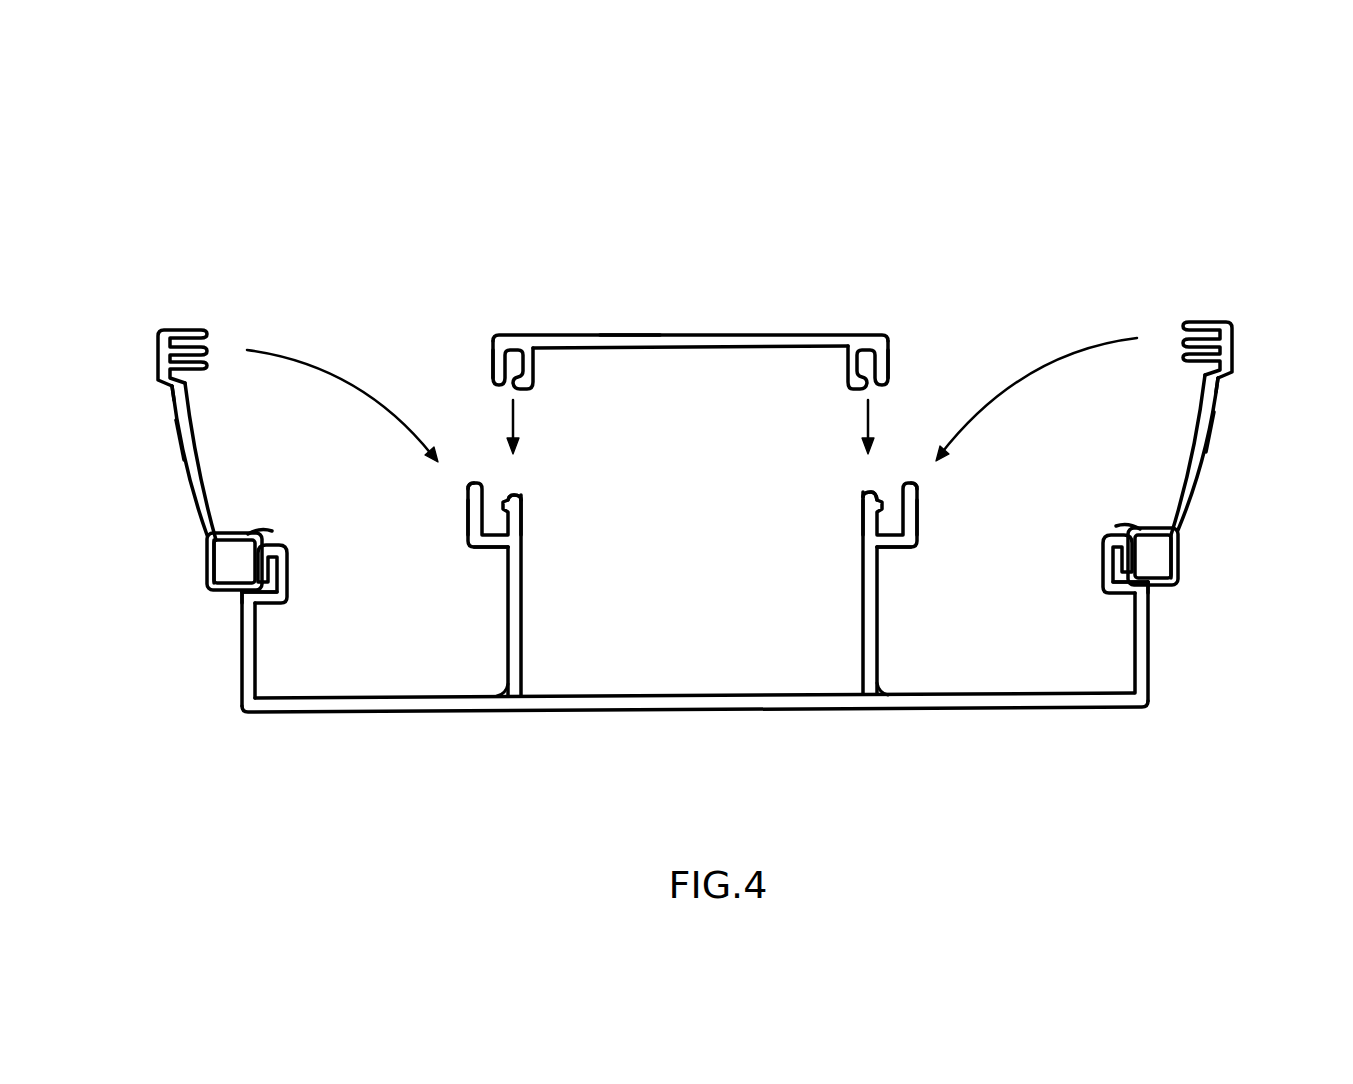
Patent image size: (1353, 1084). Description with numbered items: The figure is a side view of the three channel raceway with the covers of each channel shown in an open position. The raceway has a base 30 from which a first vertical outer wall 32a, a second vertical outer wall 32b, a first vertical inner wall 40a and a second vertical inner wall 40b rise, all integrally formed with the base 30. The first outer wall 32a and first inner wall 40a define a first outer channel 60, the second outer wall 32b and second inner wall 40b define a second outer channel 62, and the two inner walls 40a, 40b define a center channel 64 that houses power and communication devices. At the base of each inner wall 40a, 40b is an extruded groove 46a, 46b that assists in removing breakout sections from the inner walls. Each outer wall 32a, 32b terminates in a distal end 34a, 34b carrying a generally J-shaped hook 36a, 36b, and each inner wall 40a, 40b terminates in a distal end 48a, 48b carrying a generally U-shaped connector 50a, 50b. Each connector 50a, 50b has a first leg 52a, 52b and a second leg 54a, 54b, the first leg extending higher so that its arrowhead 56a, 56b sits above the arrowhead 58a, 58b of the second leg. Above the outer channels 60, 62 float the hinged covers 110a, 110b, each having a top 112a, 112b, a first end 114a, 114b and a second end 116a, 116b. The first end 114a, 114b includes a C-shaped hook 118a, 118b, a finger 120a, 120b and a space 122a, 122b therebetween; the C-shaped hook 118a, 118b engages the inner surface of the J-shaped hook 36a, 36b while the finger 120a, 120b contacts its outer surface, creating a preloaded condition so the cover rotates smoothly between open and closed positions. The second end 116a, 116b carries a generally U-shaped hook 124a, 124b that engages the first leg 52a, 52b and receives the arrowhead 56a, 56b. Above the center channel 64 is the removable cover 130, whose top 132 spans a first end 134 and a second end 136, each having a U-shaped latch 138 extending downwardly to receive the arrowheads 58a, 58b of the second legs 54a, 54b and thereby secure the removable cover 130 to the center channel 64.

The base 30 is at (590, 711).
The first vertical outer wall 32a is at (250, 662).
The second vertical outer wall 32b is at (1145, 662).
The distal end 34a is at (247, 600).
The distal end 34b is at (1145, 595).
The J-shaped hook 36a is at (288, 572).
The J-shaped hook 36b is at (1102, 568).
The first vertical inner wall 40a is at (522, 632).
The second vertical inner wall 40b is at (862, 612).
The extruded groove 46a is at (505, 692).
The extruded groove 46b is at (880, 690).
The distal end 48a is at (522, 546).
The distal end 48b is at (862, 538).
The U-shaped connector 50a is at (490, 470).
The U-shaped connector 50b is at (896, 490).
The first leg 52a is at (478, 521).
The first leg 52b is at (920, 522).
The second leg 54a is at (525, 521).
The second leg 54b is at (862, 517).
The arrowhead 56a is at (466, 487).
The arrowhead 56b is at (920, 486).
The arrowhead 58a is at (525, 490).
The arrowhead 58b is at (858, 492).
The first outer channel 60 is at (333, 667).
The second outer channel 62 is at (1065, 663).
The center channel 64 is at (705, 675).
The hinged cover 110a is at (194, 500).
The hinged cover 110b is at (1208, 465).
The top 112a is at (185, 455).
The top 112b is at (1210, 420).
The first end 114a is at (212, 548).
The first end 114b is at (1178, 545).
The second end 116a is at (158, 380).
The second end 116b is at (1220, 372).
The C-shaped hook 118a is at (242, 592).
The C-shaped hook 118b is at (1150, 586).
The finger 120a is at (262, 532).
The finger 120b is at (1130, 528).
The space 122a is at (234, 545).
The space 122b is at (1160, 556).
The U-shaped hook 124a is at (192, 332).
The U-shaped hook 124b is at (1195, 322).
The removable cover 130 is at (740, 335).
The top 132 is at (630, 335).
The first end 134 is at (505, 333).
The second end 136 is at (870, 333).
The U-shaped latch 138 is at (889, 358).